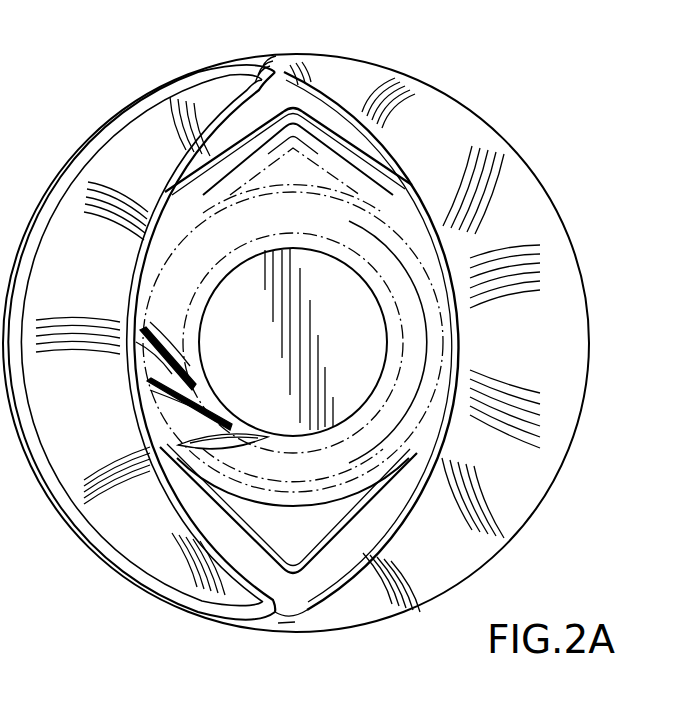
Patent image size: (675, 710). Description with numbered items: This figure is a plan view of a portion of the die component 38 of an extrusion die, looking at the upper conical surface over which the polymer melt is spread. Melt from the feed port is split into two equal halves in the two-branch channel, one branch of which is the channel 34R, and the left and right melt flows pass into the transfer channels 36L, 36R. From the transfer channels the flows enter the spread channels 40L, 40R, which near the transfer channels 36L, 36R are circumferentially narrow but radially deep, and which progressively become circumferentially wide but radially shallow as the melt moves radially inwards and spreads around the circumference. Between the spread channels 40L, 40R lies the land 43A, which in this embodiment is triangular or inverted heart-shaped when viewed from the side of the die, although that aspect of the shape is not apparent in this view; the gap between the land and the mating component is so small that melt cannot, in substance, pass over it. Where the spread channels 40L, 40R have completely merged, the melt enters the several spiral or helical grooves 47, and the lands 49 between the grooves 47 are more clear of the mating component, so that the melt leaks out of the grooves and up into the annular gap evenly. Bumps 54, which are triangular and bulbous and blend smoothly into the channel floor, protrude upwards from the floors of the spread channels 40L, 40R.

The die component 38 is at (514, 133).
The two-branch channel 34R is at (83, 528).
The transfer channel 36L is at (284, 72).
The transfer channel 36R is at (300, 615).
The spread channel 40L is at (312, 92).
The spread channel 40R is at (243, 573).
The land 43A is at (58, 288).
The spiral grooves 47 is at (170, 355).
The lands 49 is at (317, 414).
The bump 54 is at (282, 179).